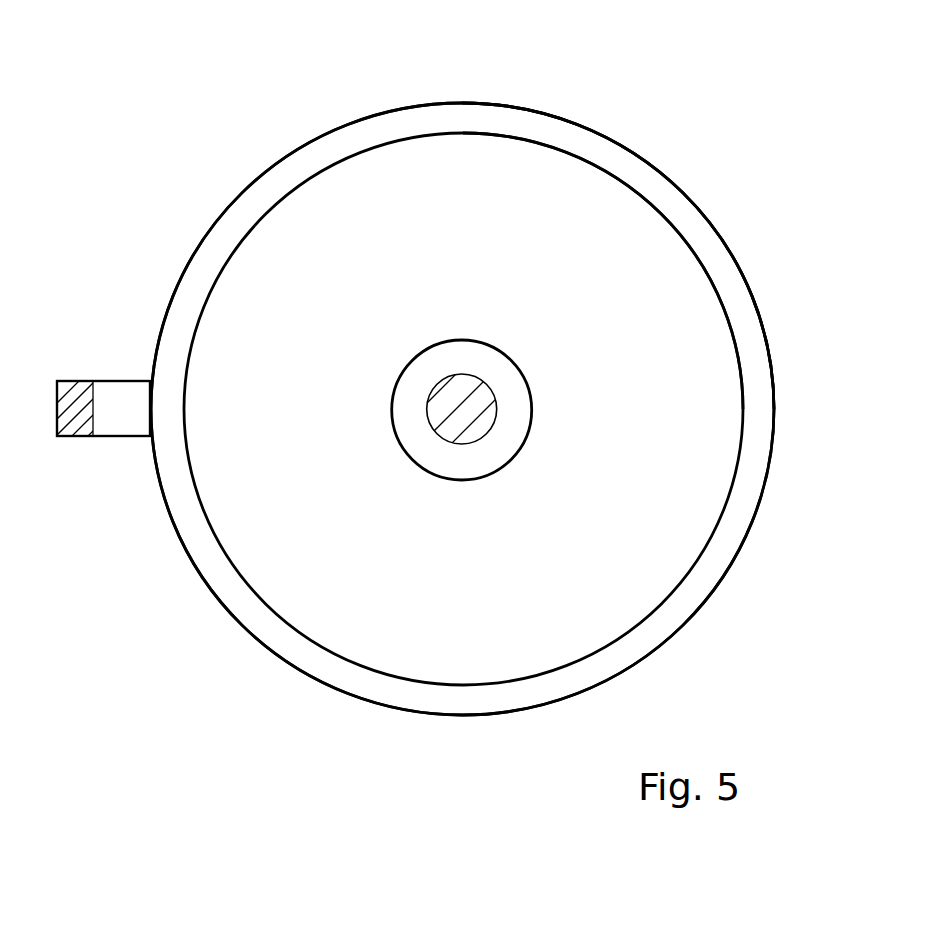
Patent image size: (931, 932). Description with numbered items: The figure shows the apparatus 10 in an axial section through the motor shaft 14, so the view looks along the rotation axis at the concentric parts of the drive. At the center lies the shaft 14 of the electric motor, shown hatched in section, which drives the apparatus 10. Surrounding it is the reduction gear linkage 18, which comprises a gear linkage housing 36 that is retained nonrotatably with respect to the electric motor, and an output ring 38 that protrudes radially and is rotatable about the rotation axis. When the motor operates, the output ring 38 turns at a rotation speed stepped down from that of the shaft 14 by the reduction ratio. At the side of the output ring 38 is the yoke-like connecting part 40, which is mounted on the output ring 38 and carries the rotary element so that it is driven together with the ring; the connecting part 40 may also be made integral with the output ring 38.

The apparatus 10 is at (215, 175).
The reduction gear linkage 18 is at (540, 105).
The gear linkage housing 36 is at (553, 170).
The output ring 38 is at (667, 198).
The shaft 14 is at (468, 388).
The connecting part 40 is at (84, 383).